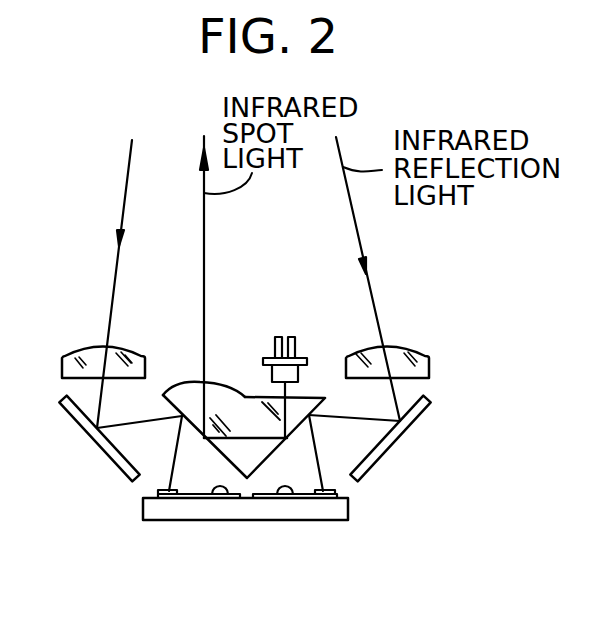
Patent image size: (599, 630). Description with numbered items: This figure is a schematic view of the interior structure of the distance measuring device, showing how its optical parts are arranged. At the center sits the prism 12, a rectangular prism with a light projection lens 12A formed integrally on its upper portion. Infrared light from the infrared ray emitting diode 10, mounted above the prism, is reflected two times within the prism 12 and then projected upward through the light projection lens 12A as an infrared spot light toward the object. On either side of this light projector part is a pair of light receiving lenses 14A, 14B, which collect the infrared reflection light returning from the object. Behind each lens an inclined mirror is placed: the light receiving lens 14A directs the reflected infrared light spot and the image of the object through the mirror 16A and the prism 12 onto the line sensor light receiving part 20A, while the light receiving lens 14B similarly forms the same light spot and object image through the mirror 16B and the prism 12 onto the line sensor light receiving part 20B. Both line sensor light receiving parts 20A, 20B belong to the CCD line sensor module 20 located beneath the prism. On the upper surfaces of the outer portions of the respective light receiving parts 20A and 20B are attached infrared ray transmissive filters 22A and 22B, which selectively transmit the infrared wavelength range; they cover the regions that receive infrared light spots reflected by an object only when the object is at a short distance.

The infrared ray emitting diode 10 is at (300, 357).
The prism 12 is at (238, 457).
The light projection lens 12A is at (220, 381).
The light receiving lens 14A is at (83, 352).
The light receiving lens 14B is at (412, 347).
The mirror 16A is at (110, 452).
The mirror 16B is at (418, 413).
The CCD line sensor module 20 is at (340, 508).
The line sensor light receiving part 20A is at (224, 498).
The line sensor light receiving part 20B is at (287, 498).
The infrared ray transmissive filter 22A is at (157, 488).
The infrared ray transmissive filter 22B is at (335, 492).